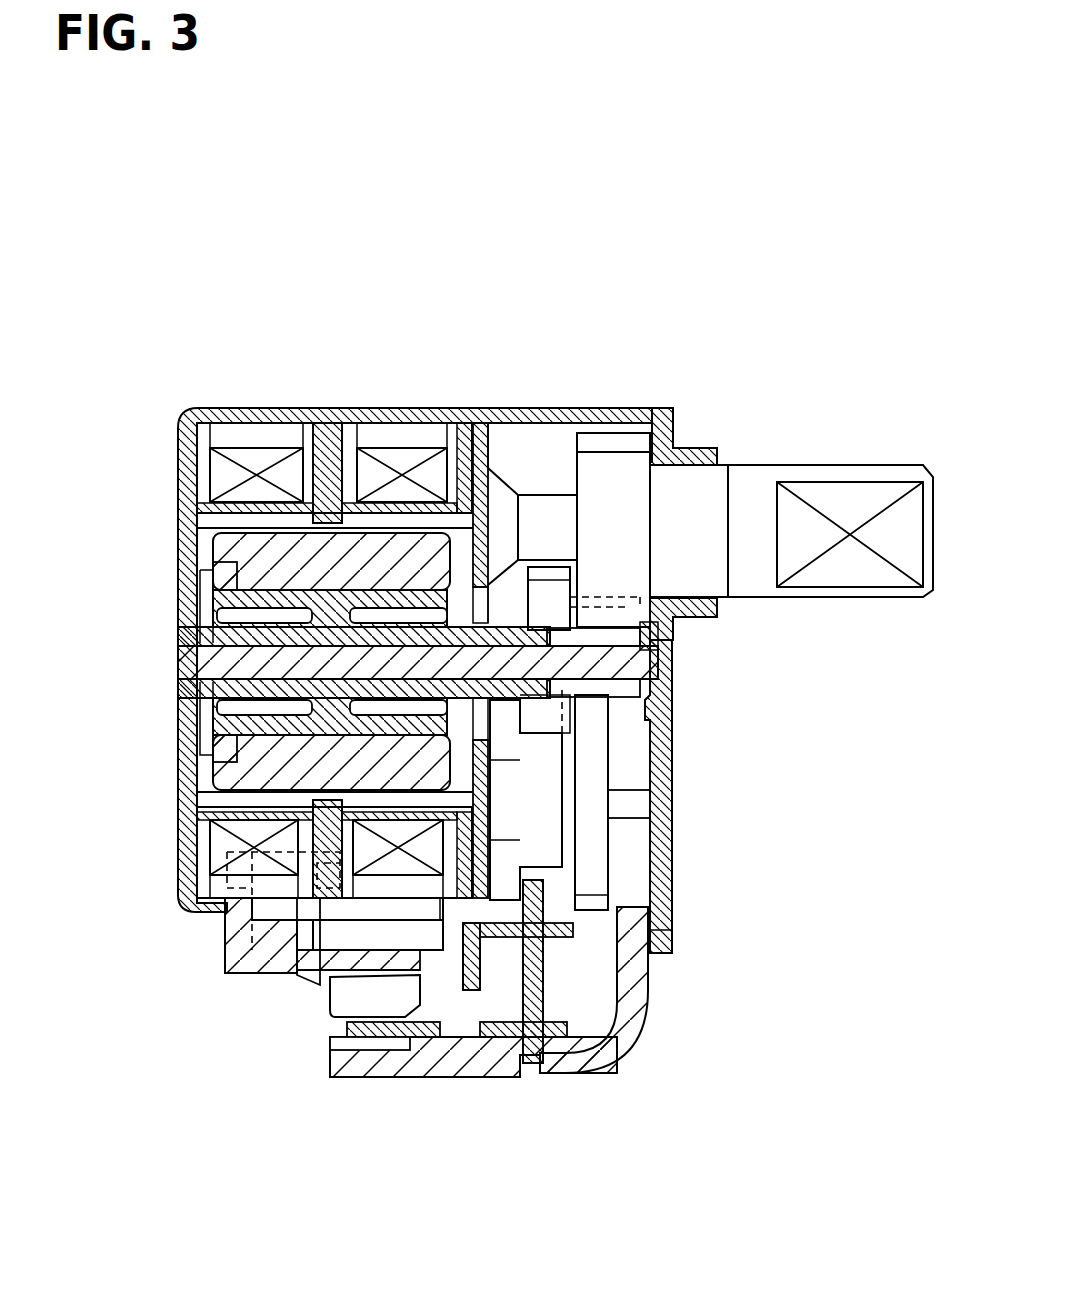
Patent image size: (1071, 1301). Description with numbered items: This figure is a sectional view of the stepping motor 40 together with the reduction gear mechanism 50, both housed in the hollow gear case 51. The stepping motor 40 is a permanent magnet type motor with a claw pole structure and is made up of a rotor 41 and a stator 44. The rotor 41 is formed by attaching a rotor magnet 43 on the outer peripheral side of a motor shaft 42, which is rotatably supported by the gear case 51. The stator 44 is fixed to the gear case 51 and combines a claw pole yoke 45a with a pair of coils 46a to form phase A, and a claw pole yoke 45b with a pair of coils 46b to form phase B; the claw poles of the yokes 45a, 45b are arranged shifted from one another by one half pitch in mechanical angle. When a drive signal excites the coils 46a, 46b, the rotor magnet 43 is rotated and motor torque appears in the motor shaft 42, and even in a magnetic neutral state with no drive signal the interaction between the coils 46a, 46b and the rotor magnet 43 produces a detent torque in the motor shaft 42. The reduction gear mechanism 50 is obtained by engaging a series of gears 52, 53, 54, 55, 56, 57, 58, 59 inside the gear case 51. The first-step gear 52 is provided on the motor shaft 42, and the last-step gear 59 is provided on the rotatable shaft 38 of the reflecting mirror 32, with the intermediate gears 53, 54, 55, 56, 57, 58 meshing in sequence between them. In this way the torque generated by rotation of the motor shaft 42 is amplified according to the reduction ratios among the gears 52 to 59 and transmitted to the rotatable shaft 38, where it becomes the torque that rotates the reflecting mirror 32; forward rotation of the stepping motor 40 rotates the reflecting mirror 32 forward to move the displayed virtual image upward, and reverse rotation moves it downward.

The reflecting mirror 32 is at (791, 469).
The rotatable shaft 38 is at (752, 497).
The stepping motor 40 is at (205, 750).
The rotor 41 is at (95, 552).
The motor shaft 42 is at (275, 632).
The rotor magnet 43 is at (237, 548).
The stator 44 is at (165, 335).
The claw pole yoke 45a is at (358, 497).
The claw pole yoke 45b is at (307, 520).
The coils 46a is at (402, 463).
The coils 46b is at (278, 465).
The reduction gear mechanism 50 is at (638, 856).
The gear case 51 is at (183, 878).
The first-step gear 52 is at (652, 718).
The gear 53 is at (598, 747).
The gear 54 is at (527, 840).
The gear 55 is at (508, 893).
The gear 56 is at (500, 887).
The gear 57 is at (570, 568).
The gear 58 is at (673, 633).
The last-step gear 59 is at (613, 443).